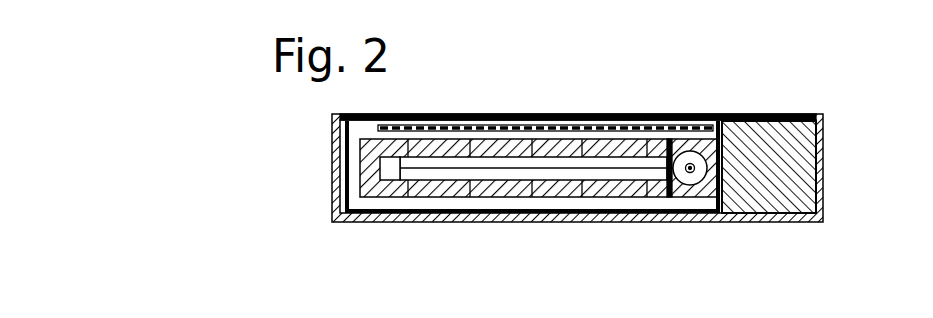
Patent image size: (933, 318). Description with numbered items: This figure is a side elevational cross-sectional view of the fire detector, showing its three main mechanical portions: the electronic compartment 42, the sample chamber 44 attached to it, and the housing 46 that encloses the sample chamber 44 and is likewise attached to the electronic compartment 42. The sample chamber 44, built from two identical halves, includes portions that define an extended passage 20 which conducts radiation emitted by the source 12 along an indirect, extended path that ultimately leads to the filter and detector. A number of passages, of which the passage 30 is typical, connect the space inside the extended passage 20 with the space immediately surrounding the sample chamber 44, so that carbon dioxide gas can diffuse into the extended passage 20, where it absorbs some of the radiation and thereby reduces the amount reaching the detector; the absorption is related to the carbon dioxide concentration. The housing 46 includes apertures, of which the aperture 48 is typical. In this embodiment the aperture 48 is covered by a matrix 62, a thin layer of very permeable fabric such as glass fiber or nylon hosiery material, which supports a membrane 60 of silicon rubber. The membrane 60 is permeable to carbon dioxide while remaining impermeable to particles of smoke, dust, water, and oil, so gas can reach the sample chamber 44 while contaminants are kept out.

The source 12 is at (689, 150).
The extended passage 20 is at (557, 192).
The passage 30 is at (467, 190).
The electronic compartment 42 is at (838, 153).
The sample chamber 44 is at (390, 205).
The housing 46 is at (332, 190).
The aperture 48 is at (565, 115).
The membrane 60 is at (378, 131).
The matrix 62 is at (430, 125).